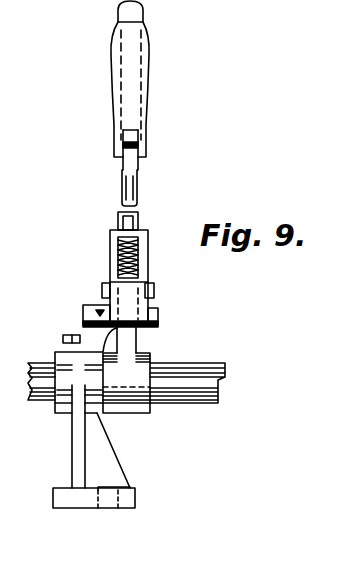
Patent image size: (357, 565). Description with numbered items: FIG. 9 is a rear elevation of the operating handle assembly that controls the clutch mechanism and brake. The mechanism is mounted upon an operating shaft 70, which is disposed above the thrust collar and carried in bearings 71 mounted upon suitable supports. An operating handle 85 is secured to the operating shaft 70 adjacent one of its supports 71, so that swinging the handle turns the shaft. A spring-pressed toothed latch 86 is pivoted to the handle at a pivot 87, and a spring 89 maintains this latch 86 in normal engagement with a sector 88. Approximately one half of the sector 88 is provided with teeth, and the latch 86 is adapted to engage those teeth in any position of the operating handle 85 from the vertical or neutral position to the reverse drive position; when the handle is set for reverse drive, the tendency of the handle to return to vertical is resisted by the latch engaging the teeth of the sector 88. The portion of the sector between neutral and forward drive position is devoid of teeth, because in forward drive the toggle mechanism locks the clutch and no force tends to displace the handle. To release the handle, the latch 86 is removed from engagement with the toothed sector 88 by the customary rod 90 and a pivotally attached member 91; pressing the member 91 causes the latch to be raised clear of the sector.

The operating handle 85 is at (133, 12).
The pivotally attached member 91 is at (133, 72).
The rod 90 is at (128, 190).
The spring 89 is at (118, 262).
The spring-pressed toothed latch 86 is at (100, 306).
The pivot 87 is at (158, 316).
The sector 88 is at (97, 338).
The operating shaft 70 is at (205, 377).
The bearings 71 is at (105, 468).